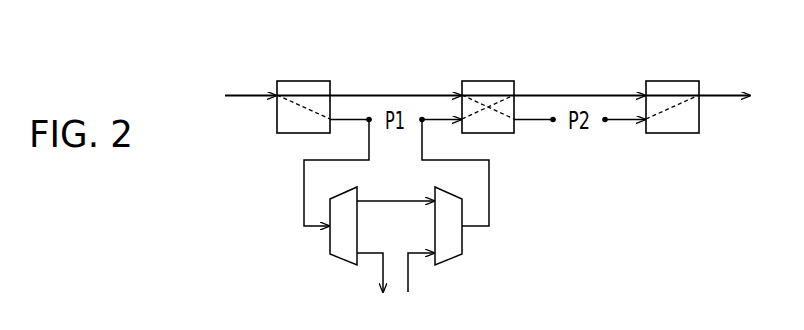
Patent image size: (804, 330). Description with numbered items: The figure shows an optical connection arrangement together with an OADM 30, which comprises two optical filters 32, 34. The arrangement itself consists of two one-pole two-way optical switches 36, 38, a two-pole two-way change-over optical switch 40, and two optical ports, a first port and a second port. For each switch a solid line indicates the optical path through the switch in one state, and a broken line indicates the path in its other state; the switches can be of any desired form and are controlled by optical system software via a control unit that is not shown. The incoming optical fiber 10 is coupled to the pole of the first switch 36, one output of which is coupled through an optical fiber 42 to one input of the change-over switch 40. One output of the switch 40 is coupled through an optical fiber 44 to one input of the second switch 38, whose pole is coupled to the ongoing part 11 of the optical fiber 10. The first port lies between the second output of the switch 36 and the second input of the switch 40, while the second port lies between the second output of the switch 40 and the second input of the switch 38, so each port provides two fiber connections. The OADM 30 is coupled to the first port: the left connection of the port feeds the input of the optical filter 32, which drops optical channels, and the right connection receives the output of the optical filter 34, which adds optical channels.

The optical fiber 10 is at (242, 93).
The 1×2 optical switch 36 is at (304, 84).
The optical fiber 42 is at (394, 93).
The 2×2 optical switch 40 is at (488, 84).
The optical fiber 44 is at (581, 93).
The 1×2 optical switch 38 is at (671, 84).
The ongoing part of the optical fiber 11 is at (721, 93).
The OADM 30 is at (408, 186).
The optical filter 32 is at (346, 257).
The optical filter 34 is at (448, 254).